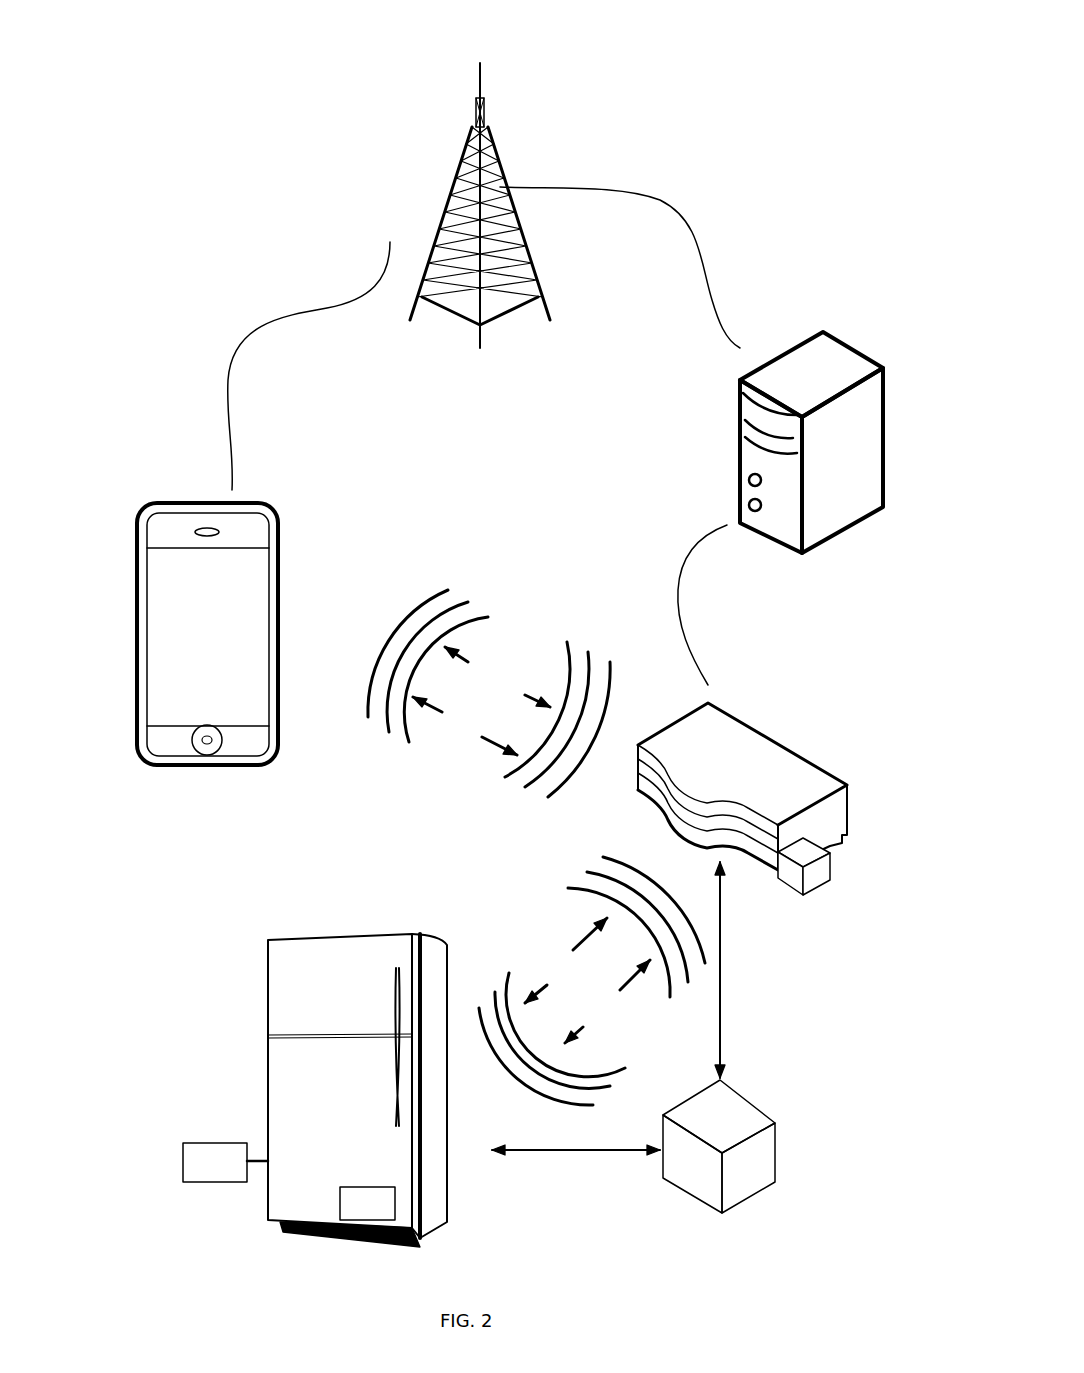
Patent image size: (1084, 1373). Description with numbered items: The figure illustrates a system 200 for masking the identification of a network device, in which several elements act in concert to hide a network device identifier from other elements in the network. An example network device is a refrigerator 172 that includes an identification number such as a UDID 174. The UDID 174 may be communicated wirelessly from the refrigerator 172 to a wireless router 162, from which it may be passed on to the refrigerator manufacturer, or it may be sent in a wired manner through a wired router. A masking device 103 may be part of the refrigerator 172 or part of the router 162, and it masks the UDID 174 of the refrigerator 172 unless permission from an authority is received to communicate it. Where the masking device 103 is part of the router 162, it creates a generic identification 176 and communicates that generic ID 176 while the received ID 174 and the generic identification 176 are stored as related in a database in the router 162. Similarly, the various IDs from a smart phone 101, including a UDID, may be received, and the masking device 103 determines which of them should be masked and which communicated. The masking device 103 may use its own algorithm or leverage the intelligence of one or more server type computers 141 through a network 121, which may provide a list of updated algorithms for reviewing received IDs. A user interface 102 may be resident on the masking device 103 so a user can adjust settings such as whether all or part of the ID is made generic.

The system 200 is at (497, 26).
The network 121 is at (432, 119).
The smart phone 101 is at (145, 488).
The user interface 102 is at (248, 643).
The server type computer 141 is at (799, 316).
The wireless router 162 is at (787, 732).
The masking device 103 is at (817, 878).
The UDID 174 is at (395, 914).
The generic identification 176 is at (531, 870).
The refrigerator 172 is at (281, 922).